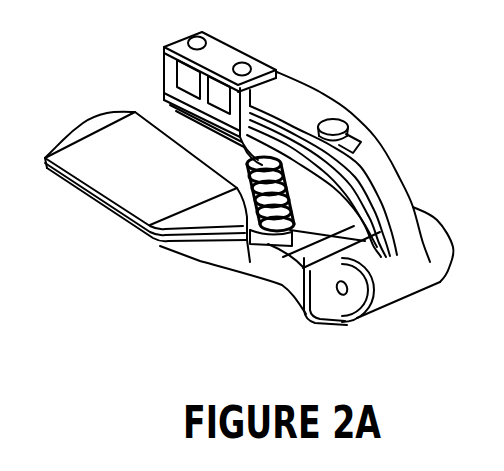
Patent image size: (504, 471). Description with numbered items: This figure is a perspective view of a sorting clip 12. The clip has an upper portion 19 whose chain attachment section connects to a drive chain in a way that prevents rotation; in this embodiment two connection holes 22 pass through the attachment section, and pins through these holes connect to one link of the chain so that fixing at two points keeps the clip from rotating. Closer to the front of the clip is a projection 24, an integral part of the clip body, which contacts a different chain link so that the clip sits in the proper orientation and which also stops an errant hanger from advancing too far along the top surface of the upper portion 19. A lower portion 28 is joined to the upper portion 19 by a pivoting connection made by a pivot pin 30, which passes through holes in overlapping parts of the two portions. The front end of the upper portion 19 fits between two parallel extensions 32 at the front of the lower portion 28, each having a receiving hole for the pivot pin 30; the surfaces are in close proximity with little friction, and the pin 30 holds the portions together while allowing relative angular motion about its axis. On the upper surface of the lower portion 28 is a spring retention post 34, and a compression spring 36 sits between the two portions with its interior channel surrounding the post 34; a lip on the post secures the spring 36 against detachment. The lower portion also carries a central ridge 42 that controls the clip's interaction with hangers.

The clip 12 is at (139, 346).
The upper portion 19 is at (292, 99).
The connection holes 22 is at (204, 42).
The projection 24 is at (336, 119).
The lower portion 28 is at (120, 225).
The pivot pin 30 is at (339, 296).
The parallel extensions 32 is at (442, 277).
The spring retention post 34 is at (262, 246).
The compression spring 36 is at (290, 200).
The central ridge 42 is at (220, 265).